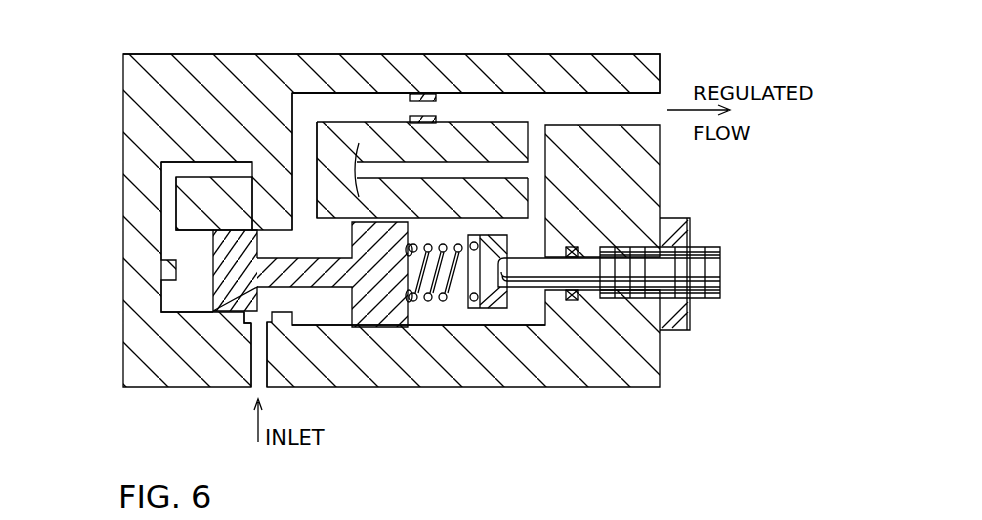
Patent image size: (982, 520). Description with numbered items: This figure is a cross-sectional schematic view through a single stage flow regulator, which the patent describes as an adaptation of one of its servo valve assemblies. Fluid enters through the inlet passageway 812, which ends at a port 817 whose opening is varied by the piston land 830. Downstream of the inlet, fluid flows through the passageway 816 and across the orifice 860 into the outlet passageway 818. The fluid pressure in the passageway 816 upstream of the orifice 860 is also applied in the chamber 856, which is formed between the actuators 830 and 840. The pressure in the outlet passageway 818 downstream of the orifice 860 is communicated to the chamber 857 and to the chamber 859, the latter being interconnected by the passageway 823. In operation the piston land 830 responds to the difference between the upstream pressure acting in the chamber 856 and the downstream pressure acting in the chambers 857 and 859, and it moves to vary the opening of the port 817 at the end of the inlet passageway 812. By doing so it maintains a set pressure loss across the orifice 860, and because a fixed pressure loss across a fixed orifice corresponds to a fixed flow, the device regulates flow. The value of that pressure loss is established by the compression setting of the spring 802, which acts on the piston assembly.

The inlet passageway 812 is at (203, 162).
The passageway 816 is at (310, 93).
The outlet passageway 818 is at (570, 93).
The orifice 860 is at (438, 101).
The passageway 823 is at (547, 166).
The chamber 856 is at (340, 245).
The chamber 857 is at (187, 288).
The piston land 830 is at (219, 319).
The port 817 is at (214, 348).
The actuator 840 is at (383, 327).
The spring 802 is at (434, 300).
The chamber 859 is at (459, 310).